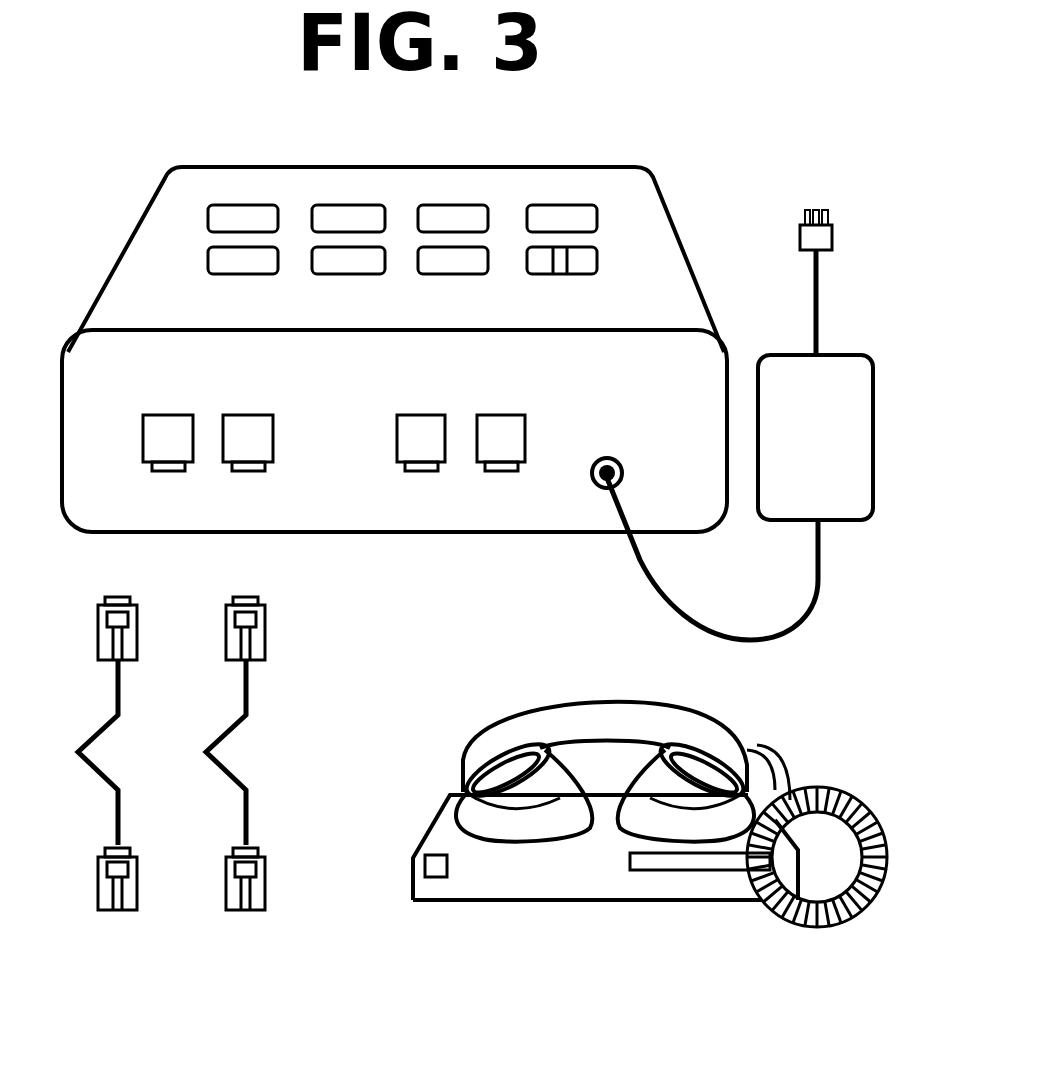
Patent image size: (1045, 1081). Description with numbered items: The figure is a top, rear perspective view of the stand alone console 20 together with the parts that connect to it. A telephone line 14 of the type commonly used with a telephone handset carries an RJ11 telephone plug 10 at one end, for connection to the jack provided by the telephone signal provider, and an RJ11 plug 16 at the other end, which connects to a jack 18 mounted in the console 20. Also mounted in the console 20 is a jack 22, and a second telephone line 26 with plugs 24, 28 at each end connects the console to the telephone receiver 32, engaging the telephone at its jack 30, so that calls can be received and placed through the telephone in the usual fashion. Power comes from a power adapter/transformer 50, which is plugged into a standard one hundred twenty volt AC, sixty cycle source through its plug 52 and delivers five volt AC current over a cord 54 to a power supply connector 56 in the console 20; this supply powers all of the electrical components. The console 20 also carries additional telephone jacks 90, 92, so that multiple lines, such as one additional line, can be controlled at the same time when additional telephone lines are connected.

The RJ11 telephone plug 10 is at (137, 880).
The telephone line 14 is at (100, 765).
The RJ11 plug 16 is at (137, 640).
The jack 18 is at (145, 440).
The console 20 is at (697, 248).
The jack 22 is at (273, 437).
The plug 24 is at (265, 640).
The telephone line 26 is at (230, 765).
The plug 28 is at (265, 880).
The jack 30 is at (420, 862).
The telephone receiver 32 is at (738, 733).
The power adapter/transformer 50 is at (838, 523).
The plug 52 is at (832, 250).
The cord 54 is at (637, 565).
The power supply connector 56 is at (620, 460).
The telephone jack 90 is at (395, 430).
The telephone jack 92 is at (527, 432).